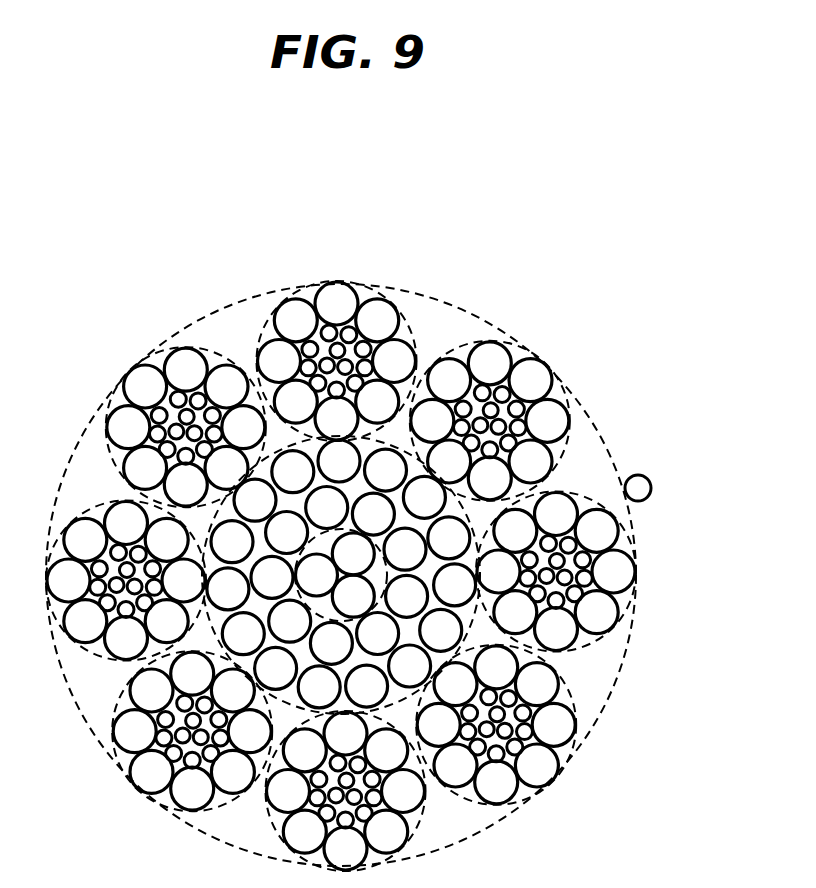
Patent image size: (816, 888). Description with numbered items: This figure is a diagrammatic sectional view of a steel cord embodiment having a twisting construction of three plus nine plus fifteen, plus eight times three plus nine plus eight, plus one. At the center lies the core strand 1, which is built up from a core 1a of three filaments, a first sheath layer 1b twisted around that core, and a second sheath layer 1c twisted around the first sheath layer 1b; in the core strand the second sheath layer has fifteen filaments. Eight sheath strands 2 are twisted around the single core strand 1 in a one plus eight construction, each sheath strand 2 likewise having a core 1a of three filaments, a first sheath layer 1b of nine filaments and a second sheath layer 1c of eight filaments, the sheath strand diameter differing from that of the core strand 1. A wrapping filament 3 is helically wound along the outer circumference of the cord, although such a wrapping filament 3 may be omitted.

The core strand 1 is at (472, 626).
The core 1a is at (293, 333).
The first sheath layer 1b is at (318, 330).
The second sheath layer 1c is at (363, 297).
The sheath strand 2 is at (372, 194).
The wrapping filament 3 is at (640, 475).